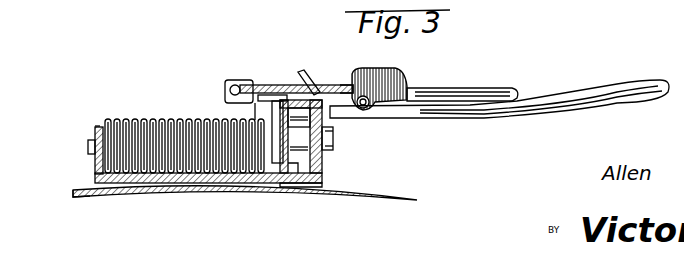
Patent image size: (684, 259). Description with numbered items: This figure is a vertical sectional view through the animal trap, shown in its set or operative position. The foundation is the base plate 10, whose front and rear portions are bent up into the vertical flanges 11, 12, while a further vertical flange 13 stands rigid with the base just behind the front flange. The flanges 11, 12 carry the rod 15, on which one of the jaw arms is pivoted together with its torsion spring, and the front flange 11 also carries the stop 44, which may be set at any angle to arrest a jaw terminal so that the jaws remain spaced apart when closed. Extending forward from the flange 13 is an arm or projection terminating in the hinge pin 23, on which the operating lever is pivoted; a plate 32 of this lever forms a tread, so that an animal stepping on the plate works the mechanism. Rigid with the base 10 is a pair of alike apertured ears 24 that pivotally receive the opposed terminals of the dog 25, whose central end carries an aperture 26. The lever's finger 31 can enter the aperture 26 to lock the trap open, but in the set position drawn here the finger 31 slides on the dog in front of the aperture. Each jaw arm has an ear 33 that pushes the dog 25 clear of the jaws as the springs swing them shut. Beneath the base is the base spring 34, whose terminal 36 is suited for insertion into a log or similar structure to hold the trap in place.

The base plate 10 is at (222, 188).
The front vertical flange 11 is at (320, 173).
The rear vertical flange 12 is at (97, 165).
The vertical flange 13 is at (295, 187).
The rod 15 is at (80, 111).
The hinge pin 23 is at (367, 110).
The ear 24 is at (247, 80).
The dog 25 is at (275, 96).
The aperture 26 is at (340, 83).
The finger 31 is at (356, 70).
The plate 32 is at (483, 90).
The ear 33 is at (227, 103).
The base spring 34 is at (377, 199).
The terminal 36 is at (83, 197).
The stop 44 is at (297, 75).